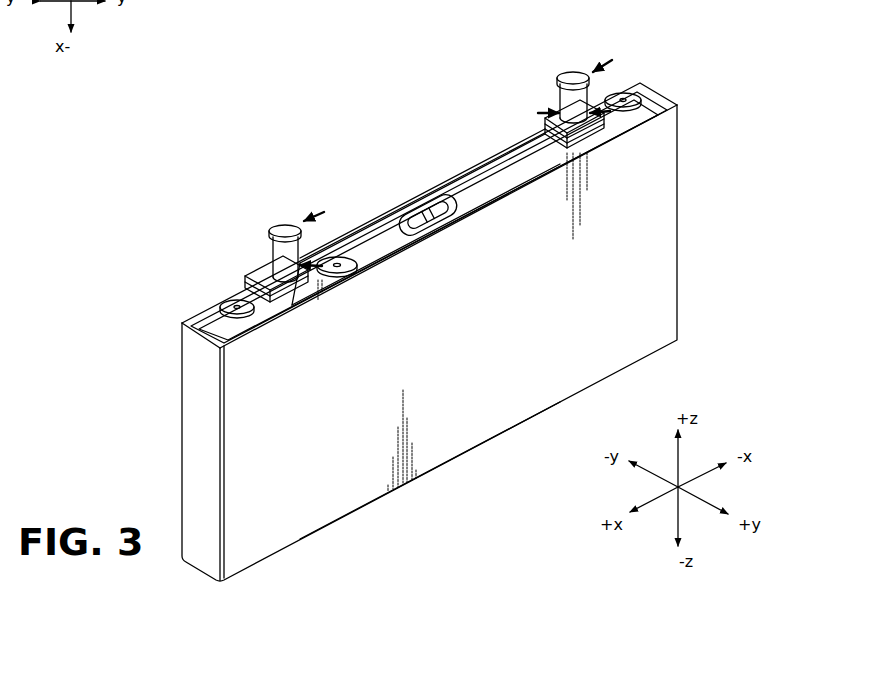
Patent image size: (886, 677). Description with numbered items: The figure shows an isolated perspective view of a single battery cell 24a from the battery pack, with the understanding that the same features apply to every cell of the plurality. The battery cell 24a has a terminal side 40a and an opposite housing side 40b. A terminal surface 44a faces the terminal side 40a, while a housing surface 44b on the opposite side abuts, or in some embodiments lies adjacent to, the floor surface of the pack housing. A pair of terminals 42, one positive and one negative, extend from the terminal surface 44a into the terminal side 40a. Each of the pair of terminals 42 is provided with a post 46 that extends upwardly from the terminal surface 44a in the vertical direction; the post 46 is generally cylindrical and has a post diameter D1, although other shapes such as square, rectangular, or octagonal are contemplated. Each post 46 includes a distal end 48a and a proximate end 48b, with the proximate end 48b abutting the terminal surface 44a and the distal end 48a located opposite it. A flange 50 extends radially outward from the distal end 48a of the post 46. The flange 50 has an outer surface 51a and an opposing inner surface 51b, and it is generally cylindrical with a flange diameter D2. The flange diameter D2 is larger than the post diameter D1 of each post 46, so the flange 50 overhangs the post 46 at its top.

The battery cell 24a is at (472, 309).
The terminal side 40a is at (627, 78).
The housing side 40b is at (472, 343).
The pair of terminals 42 is at (358, 203).
The terminal surface 44a is at (462, 192).
The housing surface 44b is at (484, 444).
The post 46 is at (294, 267).
The distal end 48a is at (380, 224).
The proximate end 48b is at (299, 285).
The flange 50 is at (381, 183).
The outer surface 51a is at (276, 224).
The inner surface 51b is at (350, 262).
The post diameter D1 is at (322, 266).
The flange diameter D2 is at (324, 212).